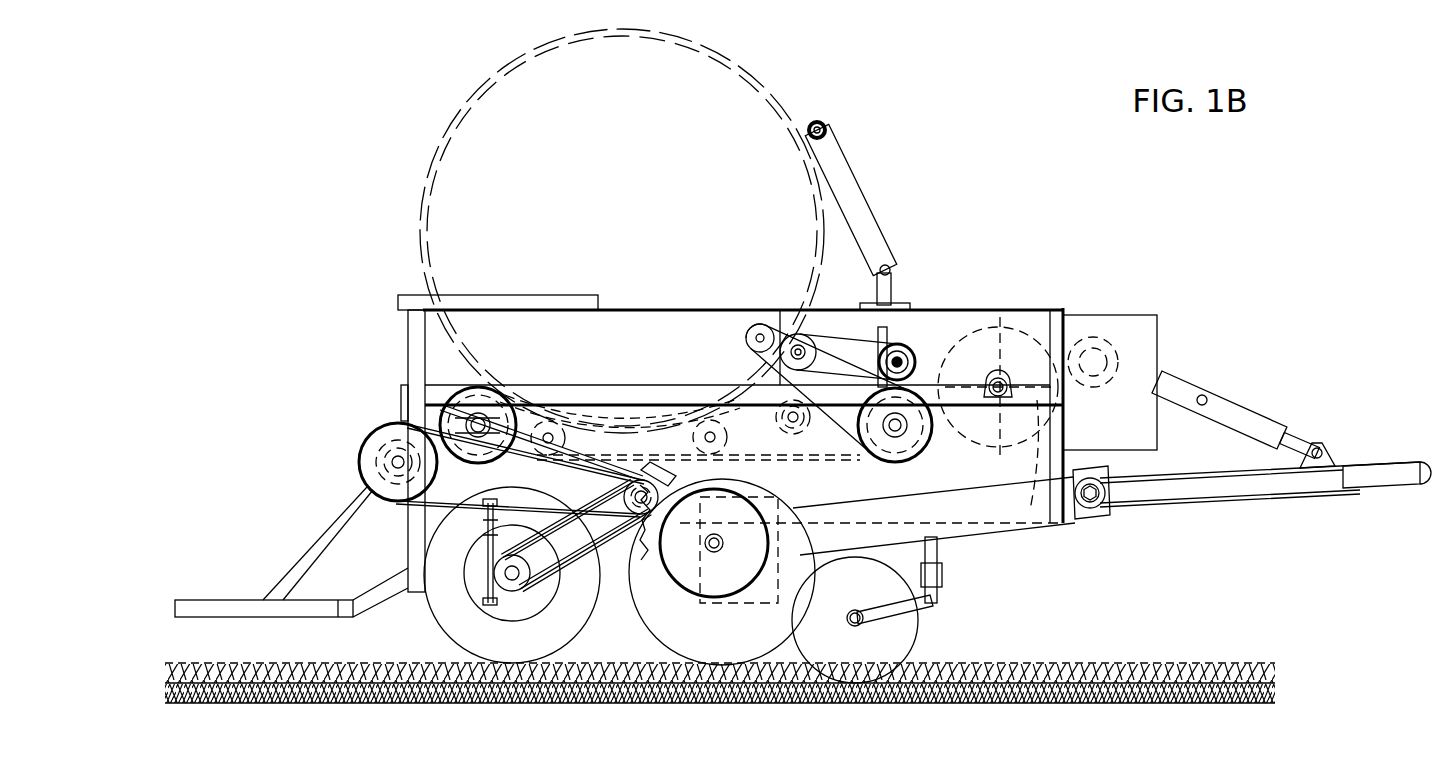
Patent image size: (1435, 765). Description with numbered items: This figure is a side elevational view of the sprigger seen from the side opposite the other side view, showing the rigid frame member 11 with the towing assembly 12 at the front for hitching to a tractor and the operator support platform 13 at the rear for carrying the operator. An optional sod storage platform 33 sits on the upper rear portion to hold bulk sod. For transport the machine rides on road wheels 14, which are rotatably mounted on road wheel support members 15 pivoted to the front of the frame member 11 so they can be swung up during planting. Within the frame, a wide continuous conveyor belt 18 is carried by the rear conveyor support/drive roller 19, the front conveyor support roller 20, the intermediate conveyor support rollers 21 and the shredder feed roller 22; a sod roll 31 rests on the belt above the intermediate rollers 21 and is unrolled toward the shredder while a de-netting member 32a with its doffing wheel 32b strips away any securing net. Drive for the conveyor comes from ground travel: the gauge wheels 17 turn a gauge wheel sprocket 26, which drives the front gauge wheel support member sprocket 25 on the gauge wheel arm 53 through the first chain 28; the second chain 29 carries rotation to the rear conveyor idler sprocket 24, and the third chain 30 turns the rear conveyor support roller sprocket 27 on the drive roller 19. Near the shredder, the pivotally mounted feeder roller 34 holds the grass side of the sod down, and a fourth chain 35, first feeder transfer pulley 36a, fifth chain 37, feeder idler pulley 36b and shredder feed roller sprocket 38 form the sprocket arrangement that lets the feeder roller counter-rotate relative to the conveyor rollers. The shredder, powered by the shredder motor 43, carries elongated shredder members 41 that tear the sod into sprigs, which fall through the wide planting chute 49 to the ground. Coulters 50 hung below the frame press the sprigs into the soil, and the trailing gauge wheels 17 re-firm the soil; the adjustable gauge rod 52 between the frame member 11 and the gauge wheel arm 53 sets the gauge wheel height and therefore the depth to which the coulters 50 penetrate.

The rigid frame member 11 is at (405, 352).
The towing assembly 12 is at (1358, 470).
The operator support platform 13 is at (225, 605).
The road wheels 14 is at (770, 680).
The road wheel support members 15 is at (955, 555).
The gauge wheels 17 is at (585, 640).
The conveyor belt 18 is at (600, 425).
The rear conveyor support/drive roller 19 is at (483, 410).
The front conveyor support roller 20 is at (800, 440).
The intermediate conveyor support rollers 21 is at (545, 420).
The shredder feed roller 22 is at (855, 455).
The rear conveyor idler sprocket 24 is at (370, 450).
The front gauge wheel support member sprocket 25 is at (640, 480).
The gauge wheel sprocket 26 is at (533, 590).
The rear conveyor support roller sprocket 27 is at (490, 462).
The first chain 28 is at (612, 565).
The second chain 29 is at (420, 503).
The third chain 30 is at (440, 415).
The sod roll 31 is at (455, 118).
The arm 32a is at (862, 185).
The doffing wheel 32b is at (822, 120).
The sod storage platform 33 is at (500, 296).
The feeder roller 34 is at (912, 335).
The fourth chain 35 is at (842, 345).
The first feeder transfer pulley 36a is at (798, 333).
The feeder idler pulley 36b is at (758, 323).
The fifth chain 37 is at (755, 382).
The shredder feed roller sprocket 38 is at (905, 445).
The shredder members 41 is at (1012, 320).
The shredder motor 43 is at (1120, 380).
The planting chute 49 is at (1018, 535).
The coulters 50 is at (692, 660).
The gauge rod 52 is at (480, 605).
The gauge wheel arm 53 is at (575, 540).